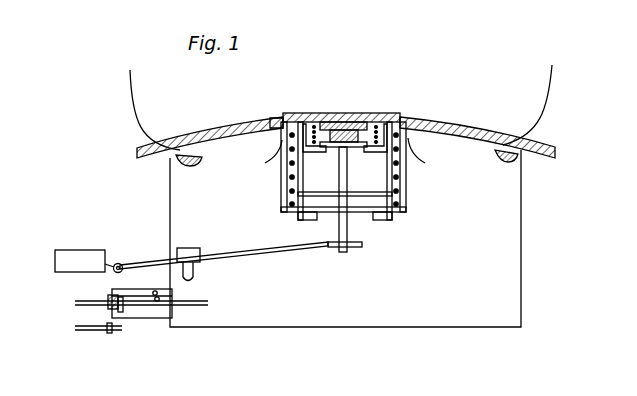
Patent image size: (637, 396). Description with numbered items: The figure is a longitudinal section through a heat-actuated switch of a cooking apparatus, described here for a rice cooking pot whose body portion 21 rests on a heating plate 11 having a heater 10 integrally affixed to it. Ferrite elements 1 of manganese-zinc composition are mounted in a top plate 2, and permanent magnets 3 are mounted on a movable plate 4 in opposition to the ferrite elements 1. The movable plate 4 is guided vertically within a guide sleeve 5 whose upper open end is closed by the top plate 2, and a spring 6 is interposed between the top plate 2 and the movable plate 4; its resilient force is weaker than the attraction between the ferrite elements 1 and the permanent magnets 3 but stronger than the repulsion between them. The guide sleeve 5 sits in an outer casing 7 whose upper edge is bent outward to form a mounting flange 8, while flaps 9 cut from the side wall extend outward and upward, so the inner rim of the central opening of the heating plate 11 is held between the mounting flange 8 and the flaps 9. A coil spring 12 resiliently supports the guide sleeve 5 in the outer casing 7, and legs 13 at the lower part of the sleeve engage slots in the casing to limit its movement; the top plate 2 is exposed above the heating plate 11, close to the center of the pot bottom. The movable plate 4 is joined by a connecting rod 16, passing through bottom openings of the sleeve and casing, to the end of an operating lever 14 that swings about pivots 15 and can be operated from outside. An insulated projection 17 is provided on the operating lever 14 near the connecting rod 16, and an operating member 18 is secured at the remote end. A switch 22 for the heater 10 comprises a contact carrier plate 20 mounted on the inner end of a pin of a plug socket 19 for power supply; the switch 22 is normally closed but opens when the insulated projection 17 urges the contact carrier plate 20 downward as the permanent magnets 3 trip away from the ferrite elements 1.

The ferrite element 1 is at (345, 117).
The top plate 2 is at (320, 117).
The permanent magnet 3 is at (357, 117).
The movable plate 4 is at (345, 171).
The guide sleeve 5 is at (398, 188).
The spring 6 is at (386, 113).
The outer casing 7 is at (278, 207).
The mounting flange 8 is at (278, 123).
The flap 9 is at (273, 147).
The heater 10 is at (518, 159).
The heating plate 11 is at (457, 142).
The coil spring 12 is at (290, 188).
The leg 13 is at (392, 220).
The operating lever 14 is at (282, 248).
The pivot 15 is at (118, 262).
The connecting rod 16 is at (347, 233).
The insulated projection 17 is at (193, 273).
The operating member 18 is at (82, 250).
The plug socket 19 is at (108, 297).
The contact carrier plate 20 is at (182, 305).
The body portion of the rice cooking pot 21 is at (532, 109).
The switch 22 is at (132, 289).